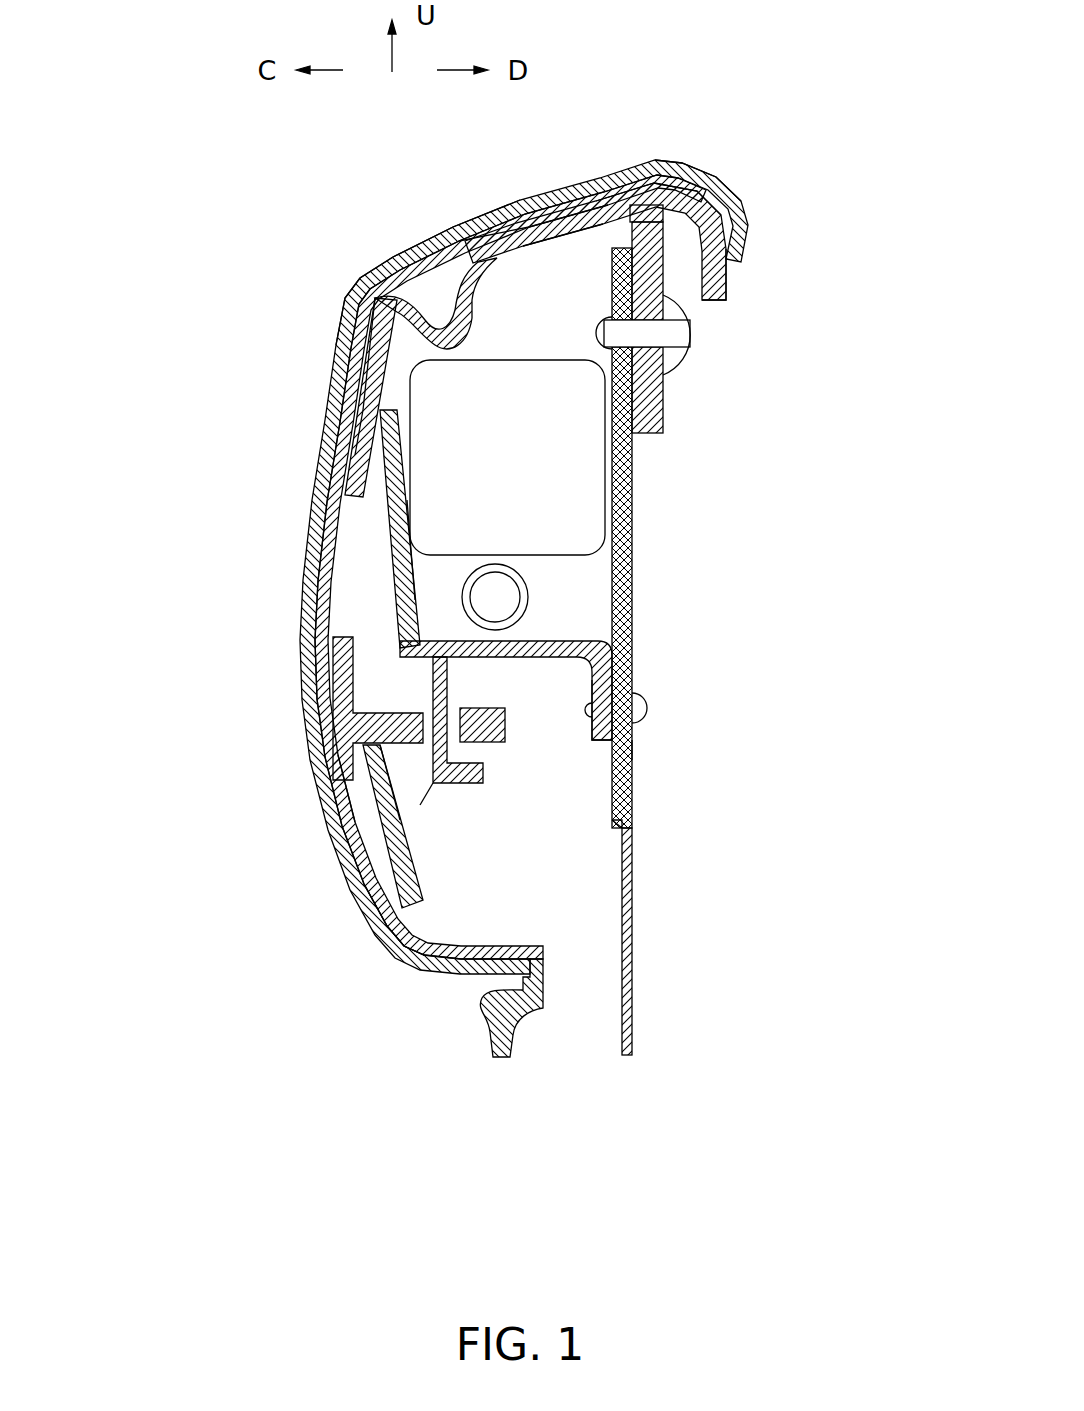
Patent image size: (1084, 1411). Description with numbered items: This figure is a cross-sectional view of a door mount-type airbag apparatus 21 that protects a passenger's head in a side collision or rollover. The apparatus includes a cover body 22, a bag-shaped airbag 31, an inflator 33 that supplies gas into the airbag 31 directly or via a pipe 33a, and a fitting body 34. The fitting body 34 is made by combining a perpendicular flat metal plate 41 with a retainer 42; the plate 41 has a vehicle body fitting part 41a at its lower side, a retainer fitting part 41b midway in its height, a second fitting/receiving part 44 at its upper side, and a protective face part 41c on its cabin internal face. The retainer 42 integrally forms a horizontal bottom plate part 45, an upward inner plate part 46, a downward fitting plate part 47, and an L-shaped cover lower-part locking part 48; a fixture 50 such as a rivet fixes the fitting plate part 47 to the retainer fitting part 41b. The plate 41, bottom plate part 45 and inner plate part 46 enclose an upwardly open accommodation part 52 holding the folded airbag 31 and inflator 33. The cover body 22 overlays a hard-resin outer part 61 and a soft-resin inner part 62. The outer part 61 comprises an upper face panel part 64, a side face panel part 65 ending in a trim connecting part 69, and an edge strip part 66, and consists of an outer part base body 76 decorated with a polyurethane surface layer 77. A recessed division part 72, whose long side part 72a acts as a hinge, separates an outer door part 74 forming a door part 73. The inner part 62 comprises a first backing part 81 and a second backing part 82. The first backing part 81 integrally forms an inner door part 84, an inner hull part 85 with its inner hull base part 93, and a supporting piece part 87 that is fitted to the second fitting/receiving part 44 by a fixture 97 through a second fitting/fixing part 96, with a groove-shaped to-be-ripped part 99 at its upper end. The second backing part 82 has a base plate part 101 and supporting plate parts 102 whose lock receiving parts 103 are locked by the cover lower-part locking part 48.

The airbag apparatus 21 is at (294, 277).
The cover body 22 is at (345, 345).
The airbag 31 is at (587, 537).
The inflator 33 is at (530, 594).
The pipe 33a is at (528, 606).
The fitting body 34 is at (634, 752).
The plate 41 is at (632, 488).
The vehicle body fitting part 41a is at (632, 965).
The retainer fitting part 41b is at (642, 710).
The protective face part 41c is at (607, 787).
The retainer 42 is at (457, 785).
The second fitting/receiving part 44 is at (660, 383).
The bottom plate part 45 is at (520, 660).
The inner plate part 46 is at (380, 558).
The fitting plate part 47 is at (585, 728).
The cover lower-part locking part 48 is at (410, 897).
The fixture 50 is at (640, 700).
The accommodation part 52 is at (428, 597).
The outer part 61 is at (513, 206).
The inner part 62 is at (553, 210).
The upper face panel part 64 is at (433, 233).
The side face panel part 65 is at (310, 504).
The edge strip part 66 is at (738, 276).
The trim connecting part 69 is at (483, 1040).
The division part 72 is at (393, 270).
The long side part 72a is at (397, 276).
The door part 73 is at (480, 240).
The outer door part 74 is at (460, 243).
The outer part base body 76 is at (632, 182).
The surface layer 77 is at (680, 168).
The first backing part 81 is at (605, 195).
The second backing part 82 is at (343, 697).
The inner door part 84 is at (577, 225).
The inner hull part 85 is at (365, 410).
The supporting piece part 87 is at (660, 413).
The inner hull base part 93 is at (355, 455).
The second fitting/fixing part 96 is at (660, 318).
The fixture 97 is at (690, 350).
The to-be-ripped part 99 is at (677, 217).
The base plate part 101 is at (393, 953).
The supporting plate part 102 is at (327, 780).
The lock receiving part 103 is at (350, 843).